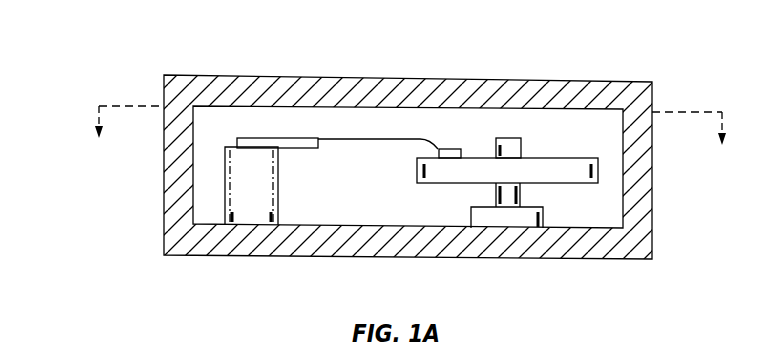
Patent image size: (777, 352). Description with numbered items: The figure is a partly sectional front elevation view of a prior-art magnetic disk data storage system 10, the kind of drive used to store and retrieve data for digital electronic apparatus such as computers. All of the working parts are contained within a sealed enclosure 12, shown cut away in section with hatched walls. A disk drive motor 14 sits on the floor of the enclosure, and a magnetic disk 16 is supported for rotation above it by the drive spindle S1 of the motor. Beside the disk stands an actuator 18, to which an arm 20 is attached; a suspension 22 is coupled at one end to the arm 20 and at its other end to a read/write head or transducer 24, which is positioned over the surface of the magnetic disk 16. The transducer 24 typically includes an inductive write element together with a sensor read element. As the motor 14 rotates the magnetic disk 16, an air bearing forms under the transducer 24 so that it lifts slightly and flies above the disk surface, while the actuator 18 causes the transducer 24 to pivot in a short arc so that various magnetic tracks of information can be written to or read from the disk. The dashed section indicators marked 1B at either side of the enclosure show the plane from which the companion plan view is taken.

The magnetic disk data storage system 10 is at (397, 153).
The sealed enclosure 12 is at (415, 258).
The disk drive motor 14 is at (515, 223).
The magnetic disk 16 is at (552, 170).
The actuator 18 is at (250, 203).
The arm 20 is at (265, 137).
The suspension 22 is at (347, 140).
The read/write head or transducer 24 is at (450, 148).
The drive spindle S1 is at (512, 140).
The section line 1B is at (410, 142).